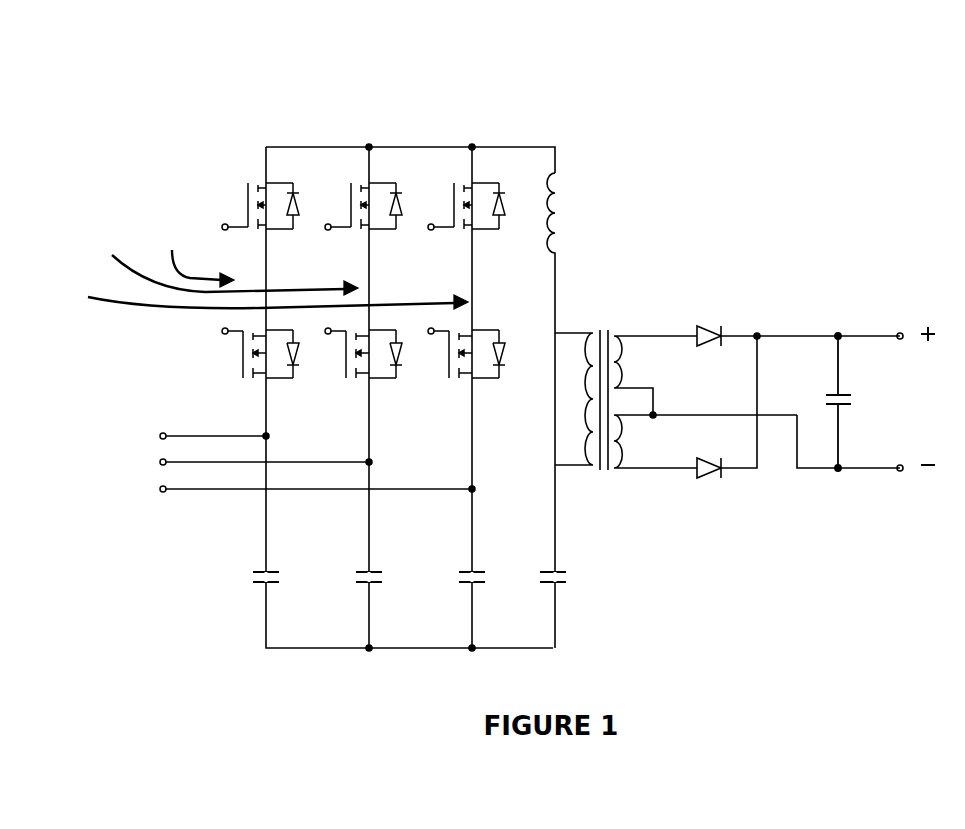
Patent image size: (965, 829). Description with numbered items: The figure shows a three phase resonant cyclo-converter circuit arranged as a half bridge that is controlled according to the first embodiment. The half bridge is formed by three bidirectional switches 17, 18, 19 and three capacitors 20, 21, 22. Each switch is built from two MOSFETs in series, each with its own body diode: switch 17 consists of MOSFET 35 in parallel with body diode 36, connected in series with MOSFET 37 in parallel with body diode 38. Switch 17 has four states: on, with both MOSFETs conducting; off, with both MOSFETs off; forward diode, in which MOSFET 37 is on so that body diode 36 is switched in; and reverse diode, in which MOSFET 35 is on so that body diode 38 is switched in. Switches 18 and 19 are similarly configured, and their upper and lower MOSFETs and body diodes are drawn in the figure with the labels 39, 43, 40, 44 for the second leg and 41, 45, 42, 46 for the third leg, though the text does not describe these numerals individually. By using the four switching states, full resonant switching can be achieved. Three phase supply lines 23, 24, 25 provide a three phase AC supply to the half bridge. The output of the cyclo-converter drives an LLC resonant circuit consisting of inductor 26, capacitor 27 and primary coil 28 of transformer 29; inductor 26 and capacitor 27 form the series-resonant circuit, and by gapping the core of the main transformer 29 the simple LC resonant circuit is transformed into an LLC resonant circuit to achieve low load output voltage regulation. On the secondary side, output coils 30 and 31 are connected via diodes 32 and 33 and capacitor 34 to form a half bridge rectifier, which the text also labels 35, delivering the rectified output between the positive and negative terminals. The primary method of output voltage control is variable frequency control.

The bidirectional switch 17 is at (196, 254).
The bidirectional switch 18 is at (226, 261).
The bidirectional switch 19 is at (258, 297).
The capacitor 20 is at (250, 593).
The capacitor 21 is at (362, 593).
The capacitor 22 is at (466, 593).
The three phase supply line 23 is at (193, 436).
The three phase supply line 24 is at (244, 462).
The three phase supply line 25 is at (296, 489).
The inductor 26 is at (585, 182).
The capacitor 27 is at (565, 595).
The primary coil 28 is at (585, 328).
The transformer 29 is at (605, 486).
The output coil 30 is at (625, 350).
The output coil 31 is at (625, 450).
The diode 32 is at (703, 330).
The diode 33 is at (707, 480).
The capacitor 34 is at (866, 398).
The MOSFET 35 is at (232, 195).
The body diode 36 is at (302, 180).
The MOSFET 37 is at (230, 367).
The body diode 38 is at (297, 372).
The second upper switch 39 is at (337, 180).
The second lower switch 40 is at (337, 365).
The third upper switch 41 is at (443, 177).
The third lower switch 42 is at (455, 385).
The body diode of second upper switch 43 is at (405, 180).
The body diode of second lower switch 44 is at (403, 375).
The body diode of third upper switch 45 is at (512, 202).
The body diode of third lower switch 46 is at (512, 355).